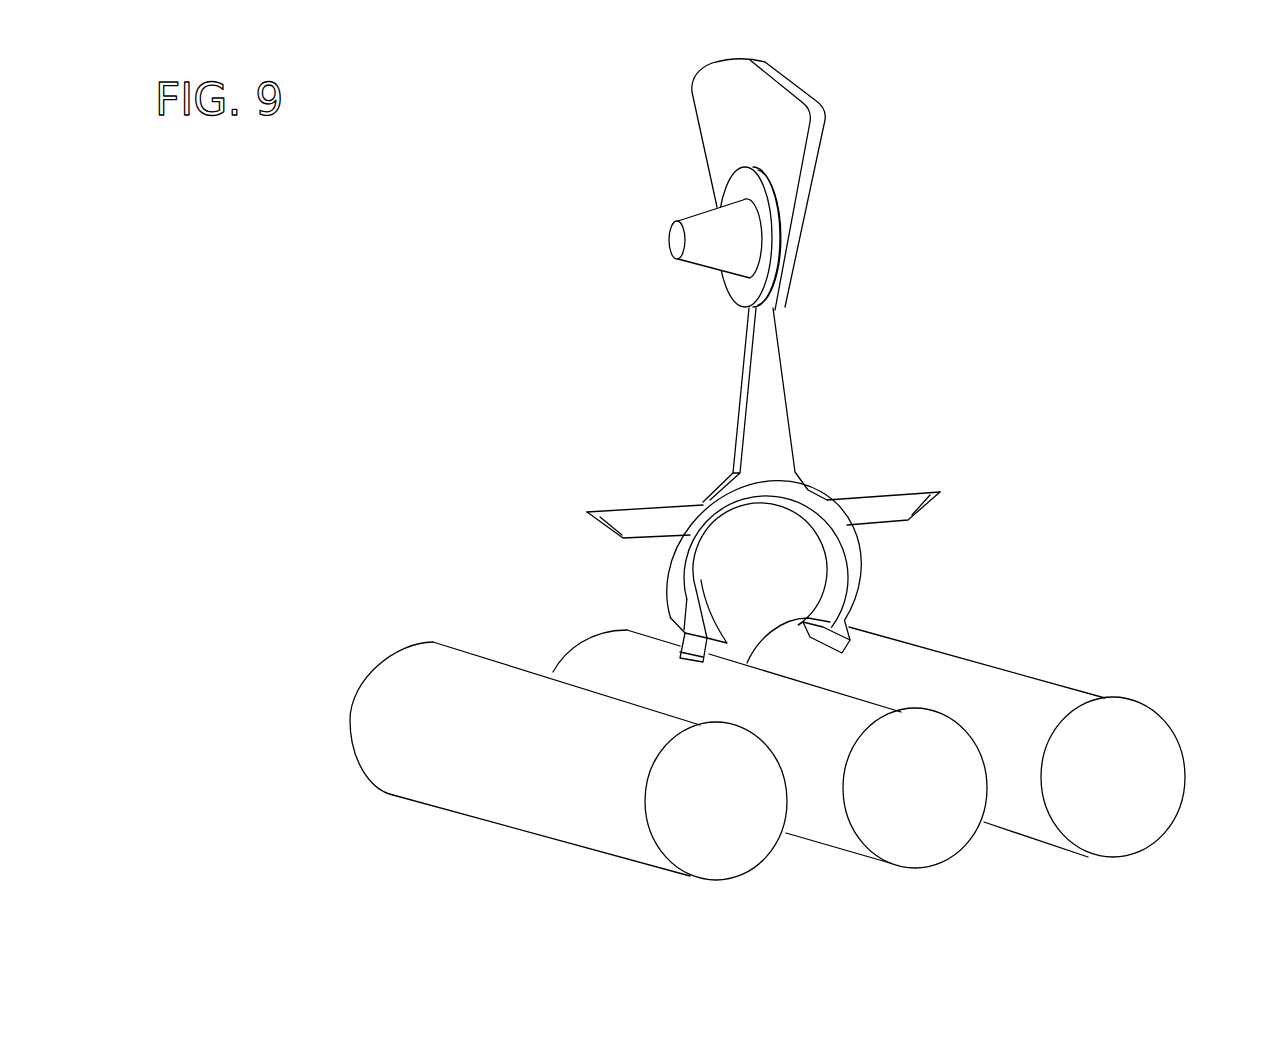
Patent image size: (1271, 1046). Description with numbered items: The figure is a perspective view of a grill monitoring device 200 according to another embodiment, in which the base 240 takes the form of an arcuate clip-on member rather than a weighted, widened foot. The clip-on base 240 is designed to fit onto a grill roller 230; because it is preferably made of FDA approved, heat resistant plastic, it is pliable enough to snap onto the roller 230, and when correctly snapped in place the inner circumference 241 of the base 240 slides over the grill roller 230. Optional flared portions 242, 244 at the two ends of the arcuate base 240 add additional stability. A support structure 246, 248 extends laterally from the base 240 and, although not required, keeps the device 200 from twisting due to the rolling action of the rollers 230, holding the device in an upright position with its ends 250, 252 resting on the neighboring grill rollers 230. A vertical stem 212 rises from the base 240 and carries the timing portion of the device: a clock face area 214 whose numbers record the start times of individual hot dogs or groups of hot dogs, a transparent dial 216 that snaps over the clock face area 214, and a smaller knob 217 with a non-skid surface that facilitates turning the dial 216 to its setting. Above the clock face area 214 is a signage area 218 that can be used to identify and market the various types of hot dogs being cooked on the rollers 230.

The device 200 is at (560, 110).
The vertical stem 212 is at (773, 393).
The clock face area 214 is at (780, 233).
The dial 216 is at (760, 283).
The knob 217 is at (723, 227).
The signage area 218 is at (785, 103).
The grill roller 230 is at (693, 858).
The base 240 is at (830, 571).
The inner circumference 241 is at (828, 565).
The flared portion 242 is at (847, 645).
The flared portion 244 is at (680, 637).
The support structure 246 is at (971, 472).
The support structure 248 is at (590, 497).
The end 250 is at (927, 510).
The end 252 is at (607, 525).